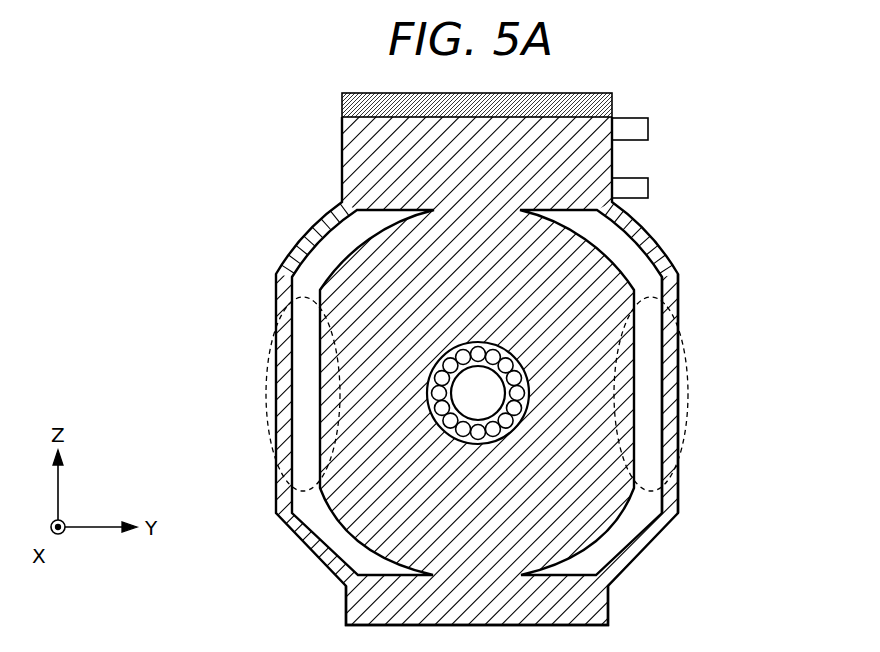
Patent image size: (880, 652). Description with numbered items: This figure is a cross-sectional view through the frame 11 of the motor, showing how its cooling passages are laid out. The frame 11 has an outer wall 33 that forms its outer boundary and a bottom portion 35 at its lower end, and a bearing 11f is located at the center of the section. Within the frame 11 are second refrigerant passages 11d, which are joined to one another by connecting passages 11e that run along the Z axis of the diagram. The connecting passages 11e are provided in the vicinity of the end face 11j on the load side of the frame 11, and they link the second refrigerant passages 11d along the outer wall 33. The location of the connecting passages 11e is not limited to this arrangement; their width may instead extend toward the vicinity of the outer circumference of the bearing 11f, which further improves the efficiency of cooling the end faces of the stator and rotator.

The frame 11 is at (342, 152).
The second refrigerant passages 11d is at (347, 236).
The connecting passages 11e is at (265, 358).
The bearing 11f is at (438, 363).
The end face 11j is at (678, 491).
The outer wall 33 is at (673, 288).
The bottom portion 35 is at (603, 608).